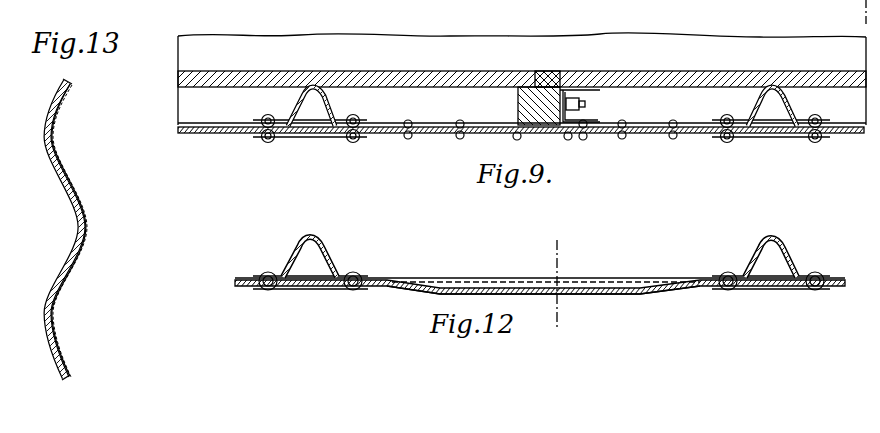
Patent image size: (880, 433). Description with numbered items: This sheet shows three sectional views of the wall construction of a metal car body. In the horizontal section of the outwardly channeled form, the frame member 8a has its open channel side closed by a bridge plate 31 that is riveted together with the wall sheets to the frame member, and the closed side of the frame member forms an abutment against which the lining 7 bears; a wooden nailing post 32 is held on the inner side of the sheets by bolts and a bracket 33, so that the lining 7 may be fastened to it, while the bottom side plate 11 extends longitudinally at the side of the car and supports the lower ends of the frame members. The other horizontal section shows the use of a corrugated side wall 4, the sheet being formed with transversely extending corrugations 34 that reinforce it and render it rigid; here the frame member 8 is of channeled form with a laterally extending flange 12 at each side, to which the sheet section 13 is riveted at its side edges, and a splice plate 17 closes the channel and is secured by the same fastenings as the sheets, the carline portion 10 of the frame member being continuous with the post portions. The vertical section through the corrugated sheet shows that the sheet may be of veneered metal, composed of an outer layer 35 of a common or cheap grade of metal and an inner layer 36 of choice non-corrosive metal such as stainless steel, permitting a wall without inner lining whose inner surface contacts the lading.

In FIG. 12, the side wall 4 is at (387, 288).
In FIG. 9, the lining 7 is at (603, 72).
In FIG. 12, the frame member 8 is at (307, 241).
In FIG. 9, the frame member 8a is at (326, 100).
In FIG. 9, the carline portion 10 is at (522, 62).
In FIG. 9, the side plate 11 is at (209, 125).
In FIG. 12, the flange 12 is at (258, 276).
In FIG. 12, the sheet section 13 is at (558, 288).
In FIG. 12, the splice plate 17 is at (302, 289).
In FIG. 9, the bridge plate 31 is at (319, 138).
In FIG. 9, the nailing post 32 is at (518, 96).
In FIG. 9, the bracket 33 is at (566, 92).
In FIG. 13, the corrugation 34 is at (60, 155).
In FIG. 12, the corrugation 34 is at (601, 287).
In FIG. 13, the outer layer 35 is at (75, 231).
In FIG. 13, the inner layer 36 is at (87, 228).